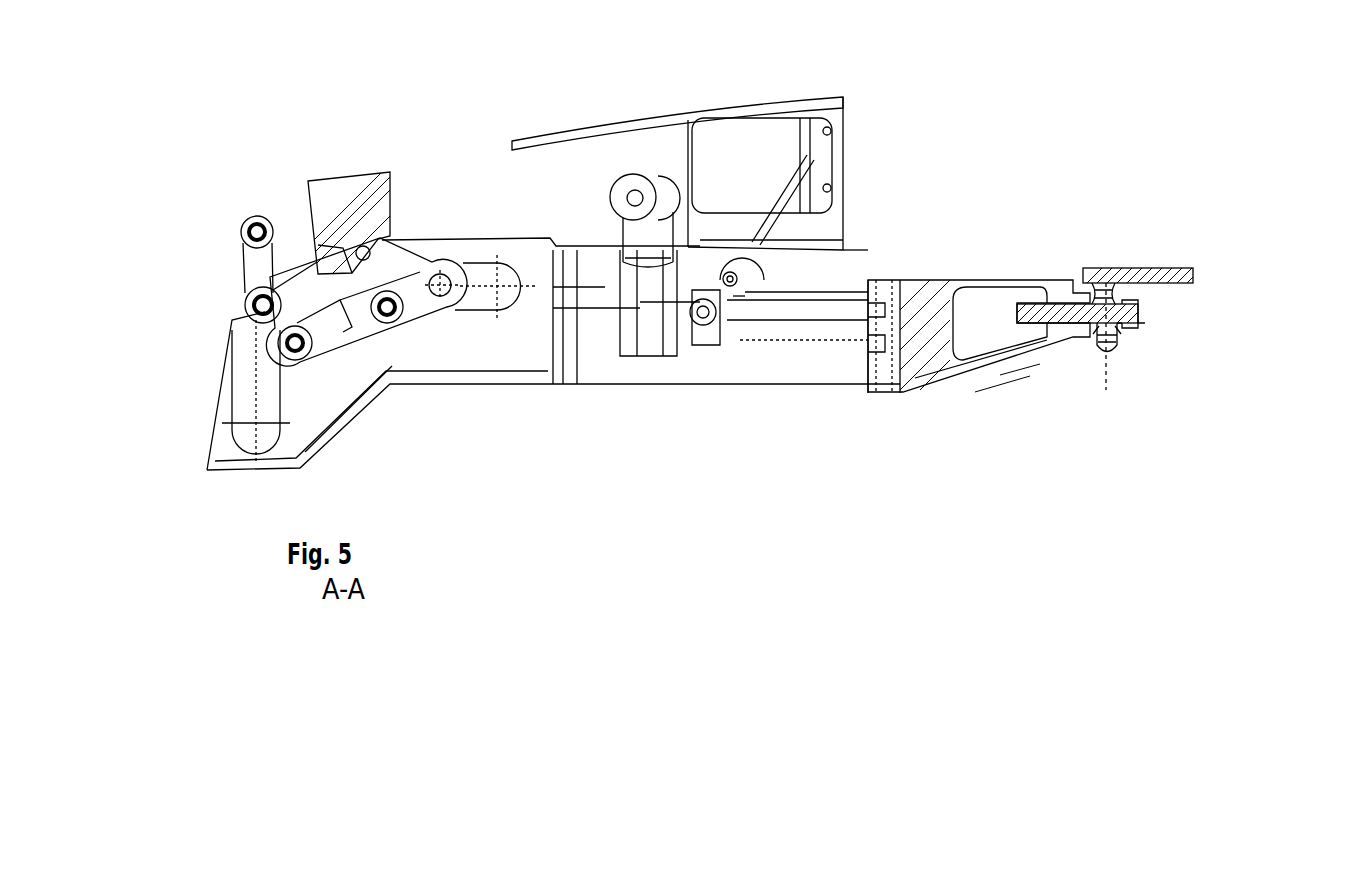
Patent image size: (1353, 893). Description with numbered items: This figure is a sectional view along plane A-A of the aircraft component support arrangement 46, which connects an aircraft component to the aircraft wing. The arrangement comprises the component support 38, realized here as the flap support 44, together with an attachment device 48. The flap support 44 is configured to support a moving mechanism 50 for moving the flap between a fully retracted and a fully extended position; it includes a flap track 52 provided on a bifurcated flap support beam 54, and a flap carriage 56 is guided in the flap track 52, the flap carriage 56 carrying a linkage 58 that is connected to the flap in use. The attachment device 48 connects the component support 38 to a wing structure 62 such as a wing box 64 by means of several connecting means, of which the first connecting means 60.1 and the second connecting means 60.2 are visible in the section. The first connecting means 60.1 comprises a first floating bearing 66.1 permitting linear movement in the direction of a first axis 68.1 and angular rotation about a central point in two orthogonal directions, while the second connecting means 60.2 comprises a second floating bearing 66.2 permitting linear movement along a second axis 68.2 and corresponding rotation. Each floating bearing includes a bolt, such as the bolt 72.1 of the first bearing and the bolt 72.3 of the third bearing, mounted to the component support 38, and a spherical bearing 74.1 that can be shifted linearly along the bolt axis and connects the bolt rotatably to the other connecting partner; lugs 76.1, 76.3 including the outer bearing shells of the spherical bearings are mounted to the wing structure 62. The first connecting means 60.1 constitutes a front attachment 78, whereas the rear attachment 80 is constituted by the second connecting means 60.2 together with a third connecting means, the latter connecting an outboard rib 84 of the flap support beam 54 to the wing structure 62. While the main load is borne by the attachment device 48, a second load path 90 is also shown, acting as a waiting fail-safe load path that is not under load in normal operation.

The component support 38 is at (496, 374).
The flap support 44 is at (496, 374).
The aircraft component support arrangement 46 is at (345, 105).
The attachment device 48 is at (748, 480).
The moving mechanism 50 is at (222, 193).
The flap track 52 is at (260, 373).
The flap support beam 54 is at (918, 357).
The flap carriage 56 is at (410, 262).
The linkage 58 is at (325, 197).
The first connecting means 60.1 is at (1112, 235).
The second connecting means 60.2 is at (745, 245).
The wing structure 62 is at (1155, 268).
The wing box 64 is at (836, 138).
The first floating bearing 66.1 is at (1141, 302).
The second floating bearing 66.2 is at (717, 306).
The first axis 68.1 is at (1067, 303).
The second axis 68.2 is at (728, 271).
The bolt 72.1 is at (1146, 327).
The bolt 72.3 is at (740, 277).
The spherical bearing 74.1 is at (1092, 358).
The lug 76.1 is at (1118, 355).
The lug 76.3 is at (752, 247).
The front attachment 78 is at (1114, 397).
The rear attachment 80 is at (735, 300).
The outboard rib 84 is at (552, 384).
The second load path 90 is at (622, 172).